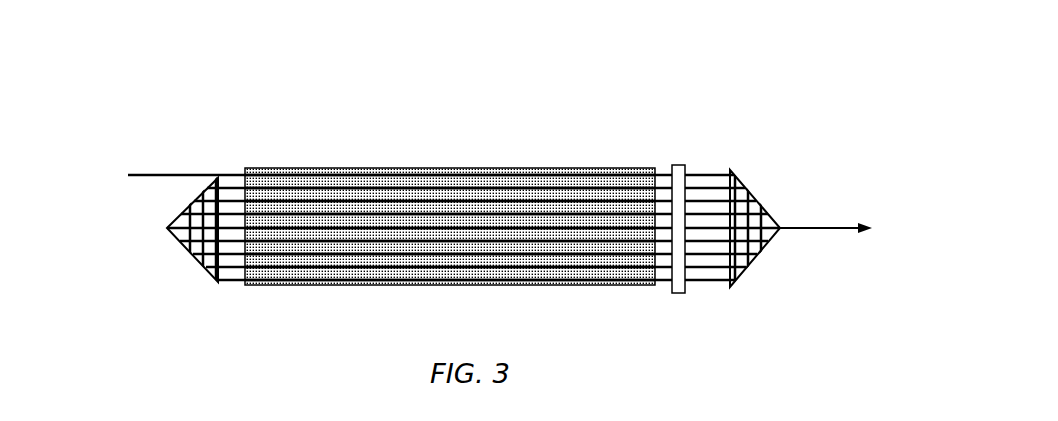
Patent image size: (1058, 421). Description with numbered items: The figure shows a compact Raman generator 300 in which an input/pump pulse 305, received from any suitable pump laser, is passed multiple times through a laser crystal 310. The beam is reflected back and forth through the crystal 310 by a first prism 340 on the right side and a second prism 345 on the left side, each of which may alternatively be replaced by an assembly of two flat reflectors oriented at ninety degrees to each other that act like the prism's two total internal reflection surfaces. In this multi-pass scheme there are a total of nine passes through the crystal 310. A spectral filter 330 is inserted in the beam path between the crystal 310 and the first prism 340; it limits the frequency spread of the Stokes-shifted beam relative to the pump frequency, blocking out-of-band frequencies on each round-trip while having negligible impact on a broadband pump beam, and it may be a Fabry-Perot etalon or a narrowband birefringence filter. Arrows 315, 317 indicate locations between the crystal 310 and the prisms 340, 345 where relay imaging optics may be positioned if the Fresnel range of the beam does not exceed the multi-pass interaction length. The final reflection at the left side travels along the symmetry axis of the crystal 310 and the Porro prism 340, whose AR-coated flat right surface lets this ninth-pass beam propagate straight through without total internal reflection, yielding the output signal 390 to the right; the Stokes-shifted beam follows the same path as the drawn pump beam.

The Raman generator 300 is at (101, 80).
The input/pump pulse 305 is at (190, 172).
The laser crystal 310 is at (362, 156).
The arrow 315 is at (713, 301).
The arrow 317 is at (230, 297).
The spectral filter 330 is at (673, 293).
The first prism 340 is at (762, 252).
The second prism 345 is at (185, 250).
The output signal 390 is at (870, 225).